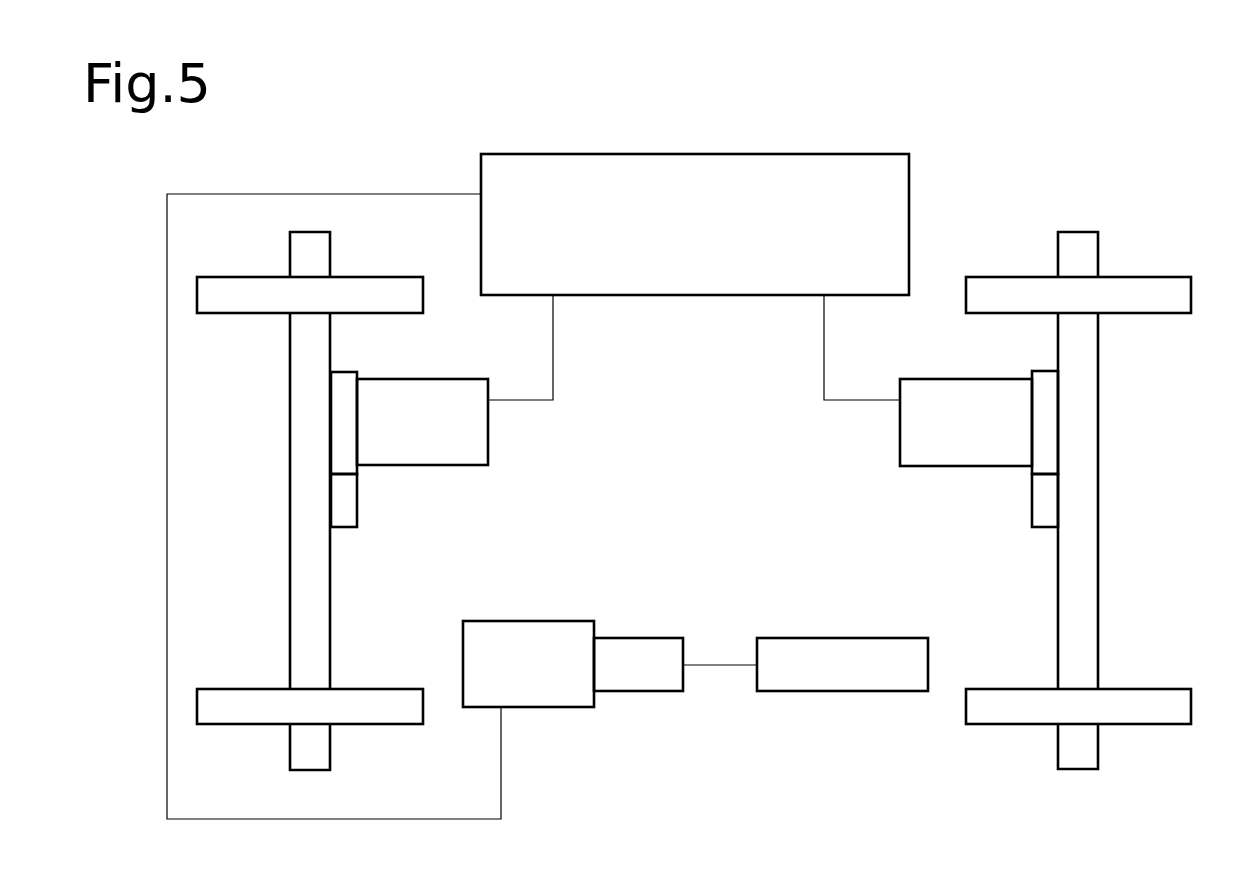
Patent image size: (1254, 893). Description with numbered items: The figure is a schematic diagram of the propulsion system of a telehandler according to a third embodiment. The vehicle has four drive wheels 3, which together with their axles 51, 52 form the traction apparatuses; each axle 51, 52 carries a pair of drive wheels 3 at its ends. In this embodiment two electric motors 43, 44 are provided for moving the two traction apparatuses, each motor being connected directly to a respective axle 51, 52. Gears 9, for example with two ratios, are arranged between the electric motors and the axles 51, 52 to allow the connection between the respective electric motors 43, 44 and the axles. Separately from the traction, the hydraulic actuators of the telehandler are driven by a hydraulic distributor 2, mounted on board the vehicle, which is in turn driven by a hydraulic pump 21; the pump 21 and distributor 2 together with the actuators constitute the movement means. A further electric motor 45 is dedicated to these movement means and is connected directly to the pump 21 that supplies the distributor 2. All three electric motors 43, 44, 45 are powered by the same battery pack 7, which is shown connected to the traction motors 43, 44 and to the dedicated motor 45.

The hydraulic distributor 2 is at (830, 640).
The drive wheels 3 is at (378, 277).
The battery pack 7 is at (690, 160).
The gears 9 is at (343, 390).
The hydraulic pump 21 is at (643, 691).
The electric motor 43 is at (438, 379).
The electric motor 44 is at (965, 379).
The electric motor 45 is at (512, 621).
The axle 51 is at (290, 410).
The axle 52 is at (1098, 446).